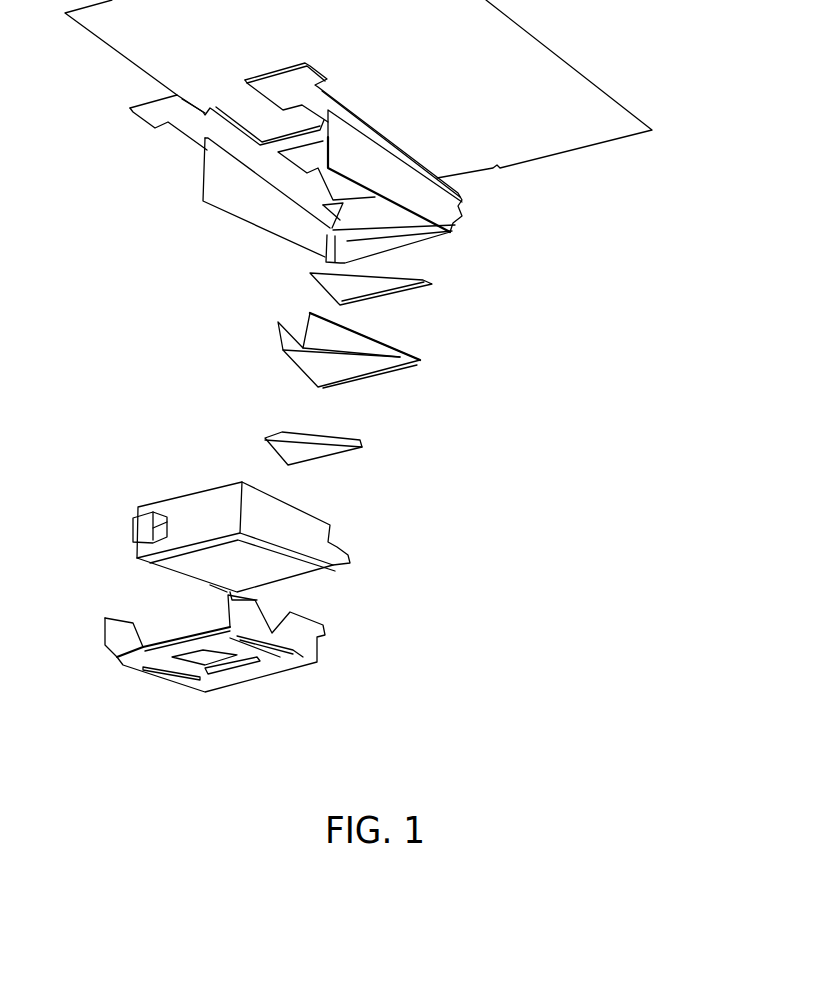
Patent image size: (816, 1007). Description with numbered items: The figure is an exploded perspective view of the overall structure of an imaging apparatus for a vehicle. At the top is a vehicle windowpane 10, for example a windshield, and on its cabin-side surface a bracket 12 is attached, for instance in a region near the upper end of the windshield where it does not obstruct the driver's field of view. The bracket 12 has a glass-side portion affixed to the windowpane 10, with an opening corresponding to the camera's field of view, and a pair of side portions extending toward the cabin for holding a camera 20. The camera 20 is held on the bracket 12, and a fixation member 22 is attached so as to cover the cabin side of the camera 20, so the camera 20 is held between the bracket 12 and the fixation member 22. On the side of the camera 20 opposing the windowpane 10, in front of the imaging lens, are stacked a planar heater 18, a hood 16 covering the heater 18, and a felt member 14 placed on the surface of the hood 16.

The vehicle windowpane 10 is at (533, 36).
The bracket 12 is at (462, 218).
The felt member 14 is at (432, 285).
The hood 16 is at (420, 362).
The heater 18 is at (362, 447).
The camera 20 is at (337, 533).
The fixation member 22 is at (320, 658).